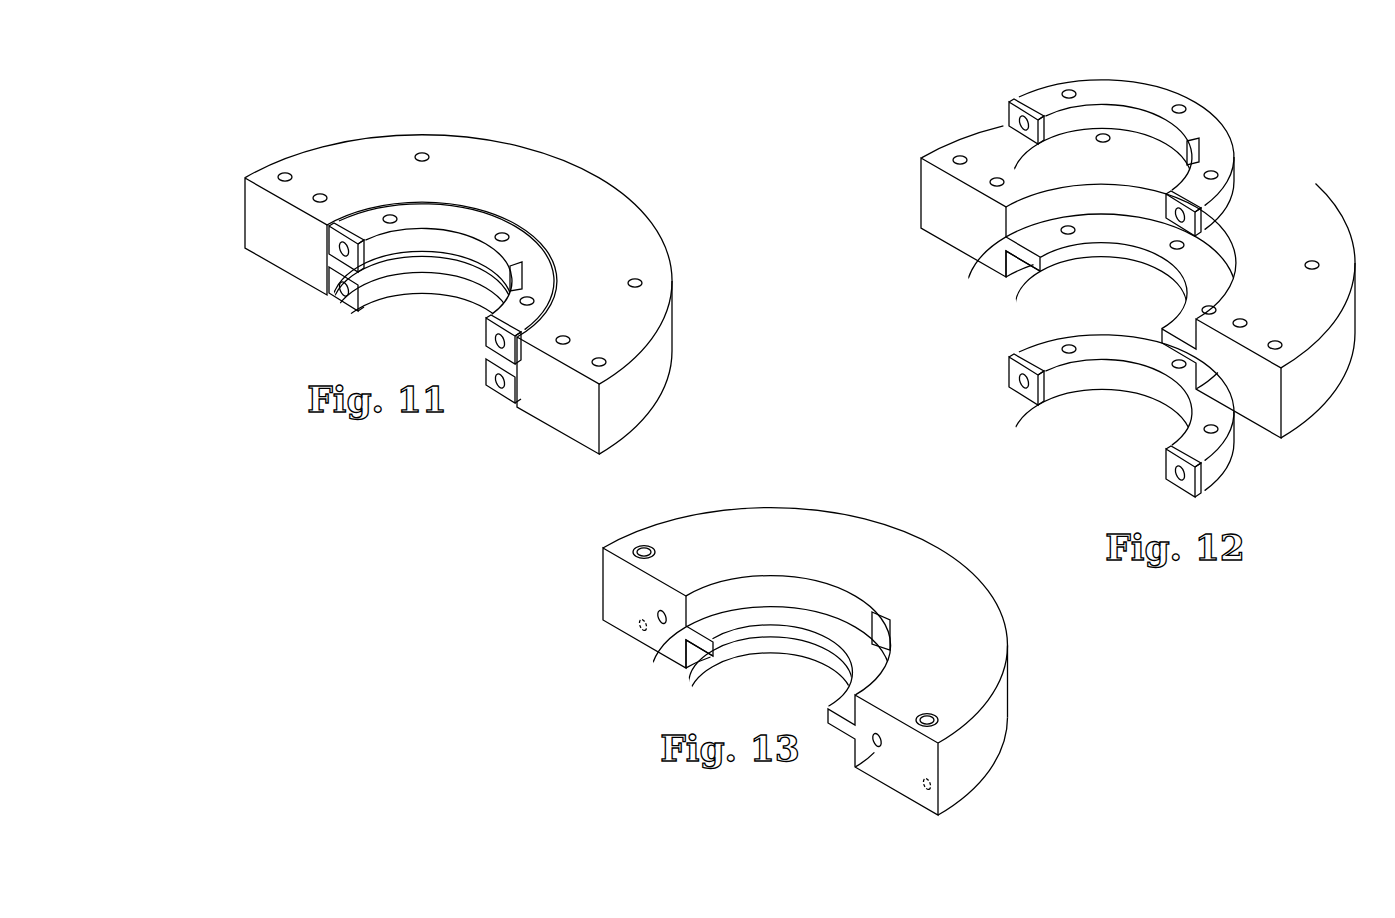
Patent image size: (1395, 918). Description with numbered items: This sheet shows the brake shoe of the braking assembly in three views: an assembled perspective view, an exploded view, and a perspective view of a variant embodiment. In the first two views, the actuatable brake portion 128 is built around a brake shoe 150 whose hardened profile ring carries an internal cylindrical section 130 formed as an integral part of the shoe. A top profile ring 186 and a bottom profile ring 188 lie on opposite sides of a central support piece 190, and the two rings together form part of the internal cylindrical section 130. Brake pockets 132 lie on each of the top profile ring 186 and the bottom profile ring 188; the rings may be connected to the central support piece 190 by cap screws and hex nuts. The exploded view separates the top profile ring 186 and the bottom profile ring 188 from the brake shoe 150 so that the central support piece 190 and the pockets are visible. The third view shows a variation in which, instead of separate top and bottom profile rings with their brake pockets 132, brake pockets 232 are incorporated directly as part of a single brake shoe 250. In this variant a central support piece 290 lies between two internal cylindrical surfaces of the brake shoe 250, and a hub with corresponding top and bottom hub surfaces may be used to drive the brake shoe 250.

In FIG. 11, the actuatable brake portion 128 is at (693, 165).
In FIG. 11, the internal cylindrical section 130 is at (455, 243).
In FIG. 12, the internal cylindrical section 130 is at (1085, 118).
In FIG. 12, the brake pockets 132 is at (1199, 150).
In FIG. 11, the brake shoe 150 is at (580, 158).
In FIG. 12, the brake shoe 150 is at (920, 205).
In FIG. 11, the top profile ring 186 is at (352, 210).
In FIG. 12, the top profile ring 186 is at (1005, 100).
In FIG. 11, the bottom profile ring 188 is at (358, 296).
In FIG. 12, the bottom profile ring 188 is at (1008, 380).
In FIG. 12, the central support piece 190 is at (1010, 263).
In FIG. 13, the brake pockets 232 is at (882, 612).
In FIG. 13, the brake shoe 250 is at (600, 598).
In FIG. 13, the central support piece 290 is at (700, 648).